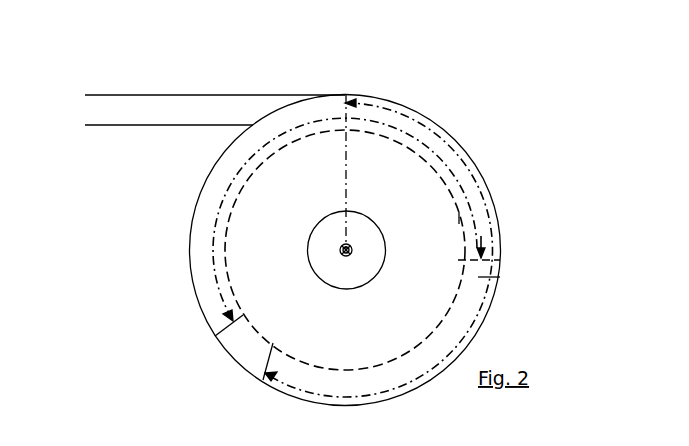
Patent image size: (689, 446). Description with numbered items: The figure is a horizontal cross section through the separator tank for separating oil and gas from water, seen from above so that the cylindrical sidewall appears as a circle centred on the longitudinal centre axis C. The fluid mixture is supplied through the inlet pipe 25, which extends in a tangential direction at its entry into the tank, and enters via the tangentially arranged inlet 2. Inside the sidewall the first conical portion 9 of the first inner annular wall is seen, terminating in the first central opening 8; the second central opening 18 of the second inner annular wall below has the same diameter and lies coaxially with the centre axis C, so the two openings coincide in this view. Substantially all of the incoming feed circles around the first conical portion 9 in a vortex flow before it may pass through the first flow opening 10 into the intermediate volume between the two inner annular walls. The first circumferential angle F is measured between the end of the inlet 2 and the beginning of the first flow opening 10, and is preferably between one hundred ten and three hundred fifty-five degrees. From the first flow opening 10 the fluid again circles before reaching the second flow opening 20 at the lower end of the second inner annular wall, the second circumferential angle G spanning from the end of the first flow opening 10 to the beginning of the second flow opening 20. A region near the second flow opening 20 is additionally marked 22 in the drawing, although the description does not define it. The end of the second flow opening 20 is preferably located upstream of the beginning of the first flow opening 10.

The inlet 2 is at (332, 90).
The inlet pipe 25 is at (180, 106).
The longitudinal centre axis C is at (352, 250).
The first central opening 8 is at (365, 266).
The second central opening 18 is at (460, 260).
The first conical portion 9 is at (318, 326).
The first circumferential angle F is at (447, 143).
The second circumferential angle G is at (233, 181).
The outlet box 22 is at (459, 213).
The second flow opening 20 is at (500, 277).
The first flow opening 10 is at (252, 351).